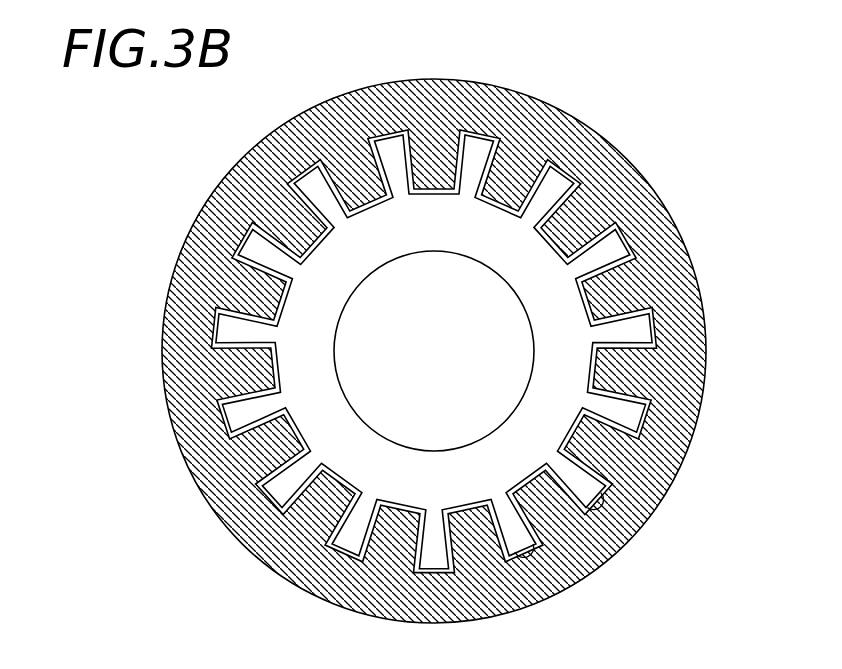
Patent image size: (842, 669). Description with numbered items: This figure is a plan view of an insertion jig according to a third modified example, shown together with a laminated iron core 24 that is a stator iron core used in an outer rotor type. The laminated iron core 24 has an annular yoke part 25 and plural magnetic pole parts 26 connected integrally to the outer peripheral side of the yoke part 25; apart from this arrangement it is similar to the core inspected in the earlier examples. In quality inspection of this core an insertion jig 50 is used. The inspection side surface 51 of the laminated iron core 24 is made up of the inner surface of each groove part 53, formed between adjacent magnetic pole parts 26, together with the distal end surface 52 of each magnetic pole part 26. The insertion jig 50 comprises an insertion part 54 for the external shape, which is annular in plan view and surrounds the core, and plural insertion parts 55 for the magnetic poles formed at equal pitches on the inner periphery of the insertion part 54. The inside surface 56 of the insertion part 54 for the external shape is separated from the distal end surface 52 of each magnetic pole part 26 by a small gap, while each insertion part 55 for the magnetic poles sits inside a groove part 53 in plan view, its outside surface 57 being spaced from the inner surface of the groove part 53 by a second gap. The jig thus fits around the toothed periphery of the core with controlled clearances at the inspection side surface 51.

The laminated iron core 24 is at (530, 222).
The annular yoke part 25 is at (578, 308).
The magnetic pole parts 26 is at (645, 332).
The insertion jig 50 is at (533, 92).
The inspection side surface 51 is at (620, 495).
The distal end surface 52 is at (645, 425).
The groove part 53 is at (612, 438).
The insertion part for external shape 54 is at (323, 123).
The insertion parts for magnetic poles 55 is at (428, 152).
The inside surface 56 is at (596, 514).
The outside surface 57 is at (530, 550).